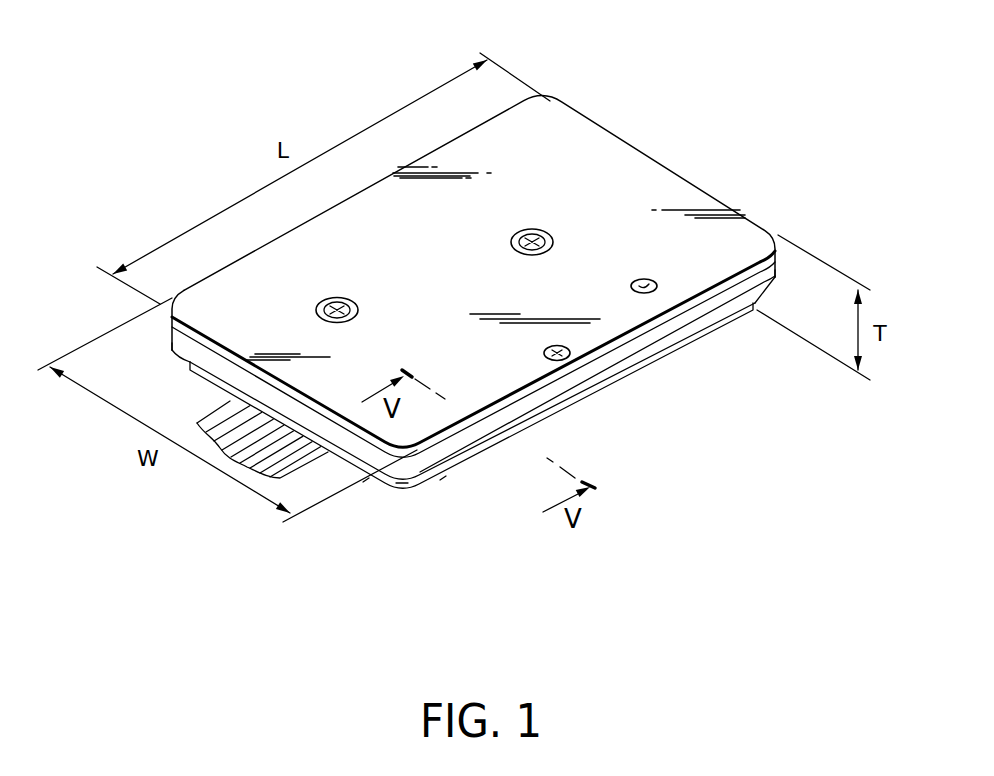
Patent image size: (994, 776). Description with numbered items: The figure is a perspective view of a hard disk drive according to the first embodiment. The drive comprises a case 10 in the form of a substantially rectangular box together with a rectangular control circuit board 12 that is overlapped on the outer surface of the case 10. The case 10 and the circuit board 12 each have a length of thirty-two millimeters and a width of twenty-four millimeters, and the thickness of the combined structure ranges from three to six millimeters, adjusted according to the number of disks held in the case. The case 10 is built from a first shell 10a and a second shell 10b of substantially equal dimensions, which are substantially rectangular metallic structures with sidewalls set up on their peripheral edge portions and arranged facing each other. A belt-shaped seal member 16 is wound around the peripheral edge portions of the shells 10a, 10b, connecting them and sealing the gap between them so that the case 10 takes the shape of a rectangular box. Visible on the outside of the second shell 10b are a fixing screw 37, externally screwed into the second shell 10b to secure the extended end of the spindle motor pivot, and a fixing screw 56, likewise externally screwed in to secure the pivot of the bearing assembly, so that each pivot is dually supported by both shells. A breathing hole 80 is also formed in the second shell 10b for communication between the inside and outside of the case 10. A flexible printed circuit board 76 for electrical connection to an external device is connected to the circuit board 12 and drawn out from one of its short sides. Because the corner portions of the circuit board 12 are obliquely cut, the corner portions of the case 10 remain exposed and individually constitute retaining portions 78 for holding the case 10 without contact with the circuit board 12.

The case 10 is at (662, 140).
The first shell 10a is at (730, 312).
The second shell 10b is at (692, 196).
The control circuit board 12 is at (583, 405).
The seal member 16 is at (651, 342).
The fixing screw 37 is at (549, 237).
The fixing screw 56 is at (336, 306).
The flexible printed circuit board 76 is at (203, 424).
The retaining portions 78 is at (777, 286).
The breathing hole 80 is at (654, 281).